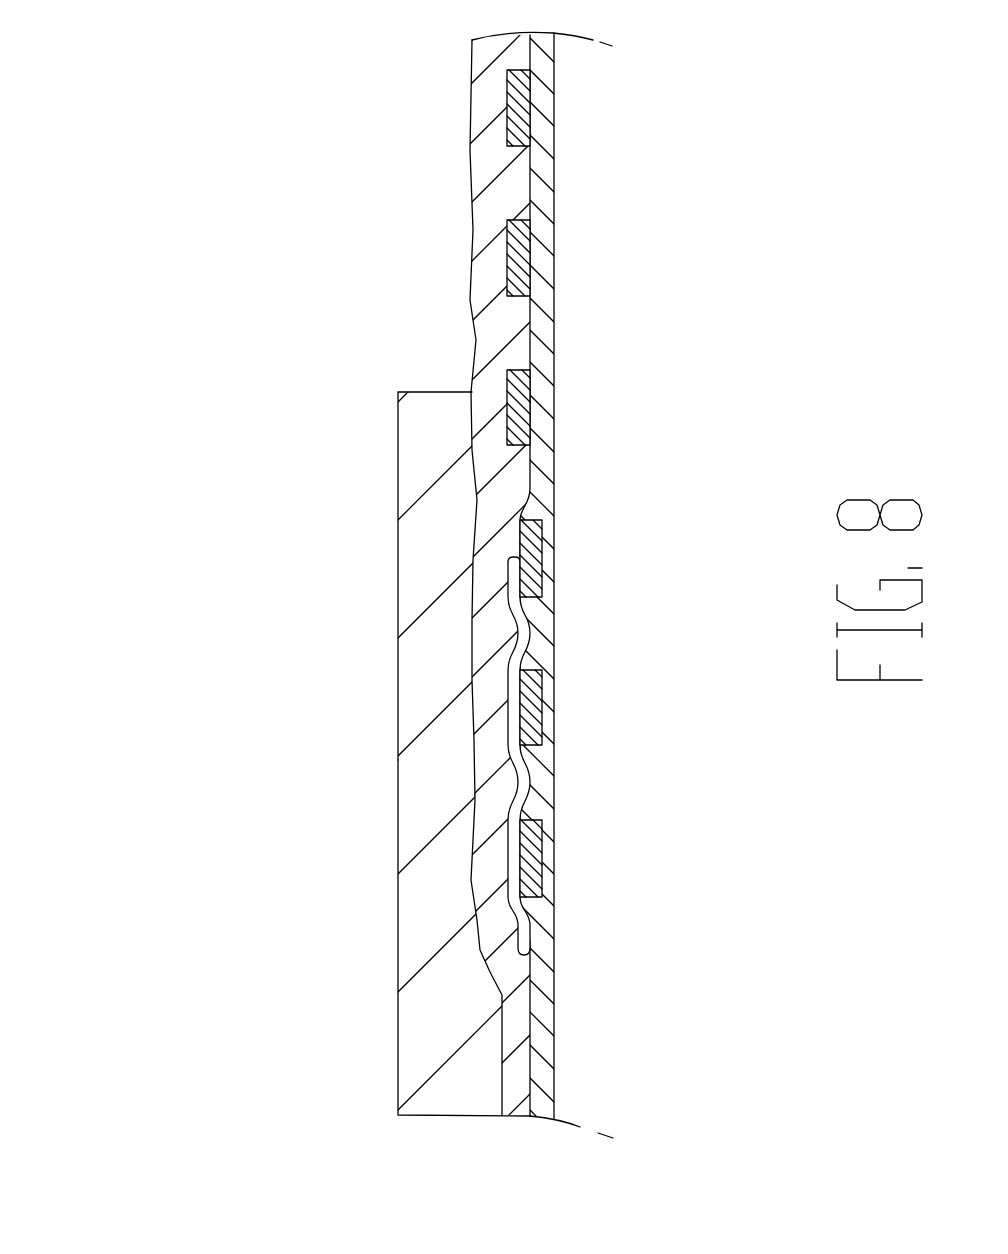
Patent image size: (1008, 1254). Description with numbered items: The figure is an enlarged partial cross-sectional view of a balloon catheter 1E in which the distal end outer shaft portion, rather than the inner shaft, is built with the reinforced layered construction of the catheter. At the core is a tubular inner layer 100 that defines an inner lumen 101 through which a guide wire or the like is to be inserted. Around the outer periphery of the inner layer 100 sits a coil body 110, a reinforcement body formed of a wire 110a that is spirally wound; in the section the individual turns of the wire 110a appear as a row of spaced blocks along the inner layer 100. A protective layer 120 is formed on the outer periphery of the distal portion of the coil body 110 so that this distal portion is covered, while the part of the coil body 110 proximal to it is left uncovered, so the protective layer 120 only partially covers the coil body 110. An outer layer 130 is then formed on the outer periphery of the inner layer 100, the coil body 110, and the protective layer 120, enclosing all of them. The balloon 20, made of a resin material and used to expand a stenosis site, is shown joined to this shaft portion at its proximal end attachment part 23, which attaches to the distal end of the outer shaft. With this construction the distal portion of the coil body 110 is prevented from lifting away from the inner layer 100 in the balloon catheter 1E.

The balloon catheter 1E is at (309, 635).
The balloon 20 is at (348, 754).
The proximal end attachment part 23 is at (343, 527).
The inner layer 100 is at (614, 575).
The inner lumen 101 is at (615, 581).
The coil body 110 is at (612, 708).
The wire 110a is at (610, 256).
The protective layer 120 is at (600, 756).
The outer layer 130 is at (589, 589).